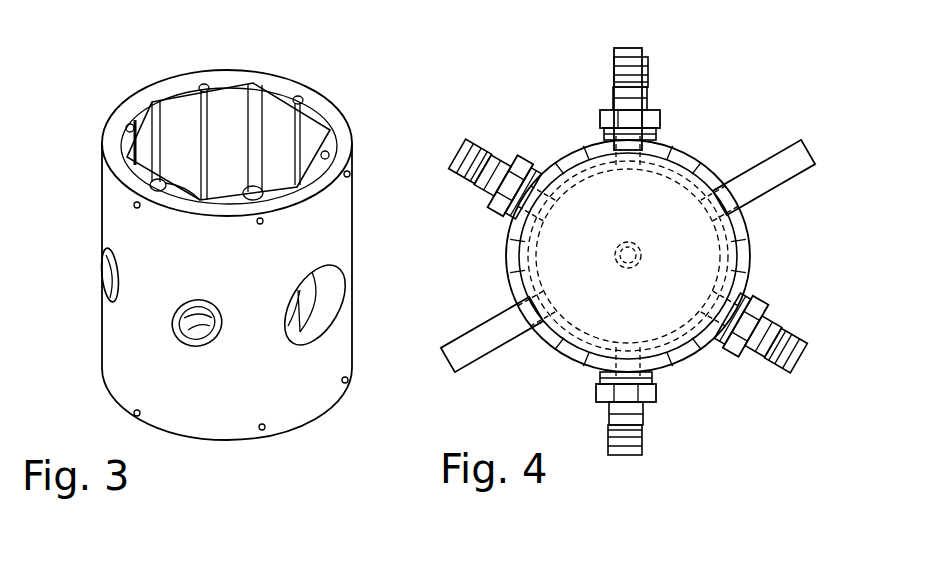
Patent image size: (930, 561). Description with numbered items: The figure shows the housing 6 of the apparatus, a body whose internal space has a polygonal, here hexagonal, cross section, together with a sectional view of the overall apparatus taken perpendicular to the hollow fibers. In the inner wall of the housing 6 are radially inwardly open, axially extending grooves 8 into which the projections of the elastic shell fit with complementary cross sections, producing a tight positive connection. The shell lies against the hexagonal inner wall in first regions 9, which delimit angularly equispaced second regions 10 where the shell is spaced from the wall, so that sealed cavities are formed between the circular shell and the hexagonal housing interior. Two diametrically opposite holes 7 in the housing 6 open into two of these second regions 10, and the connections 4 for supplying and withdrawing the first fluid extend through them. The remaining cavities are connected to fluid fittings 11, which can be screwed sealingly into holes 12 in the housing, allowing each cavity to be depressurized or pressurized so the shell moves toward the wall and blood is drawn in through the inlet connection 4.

In FIG. 4, the connection 4 is at (770, 168).
In FIG. 3, the housing 6 is at (332, 241).
In FIG. 3, the hole 7 is at (332, 298).
In FIG. 3, the groove 8 is at (212, 110).
In FIG. 4, the first region 9 is at (523, 262).
In FIG. 4, the second region 10 is at (663, 192).
In FIG. 4, the fluid fitting 11 is at (498, 168).
In FIG. 3, the hole 12 is at (199, 341).